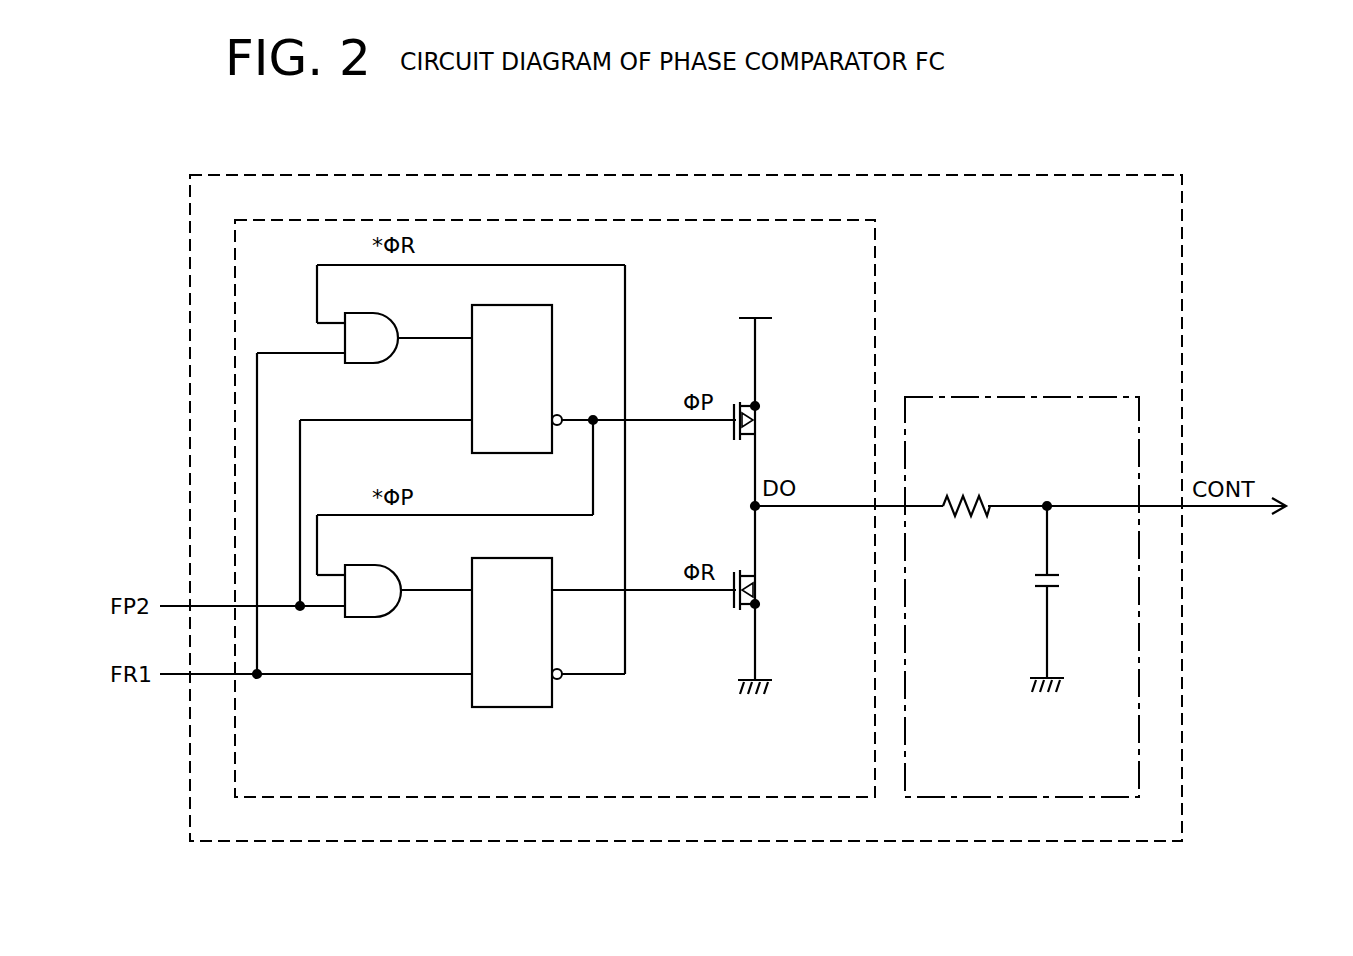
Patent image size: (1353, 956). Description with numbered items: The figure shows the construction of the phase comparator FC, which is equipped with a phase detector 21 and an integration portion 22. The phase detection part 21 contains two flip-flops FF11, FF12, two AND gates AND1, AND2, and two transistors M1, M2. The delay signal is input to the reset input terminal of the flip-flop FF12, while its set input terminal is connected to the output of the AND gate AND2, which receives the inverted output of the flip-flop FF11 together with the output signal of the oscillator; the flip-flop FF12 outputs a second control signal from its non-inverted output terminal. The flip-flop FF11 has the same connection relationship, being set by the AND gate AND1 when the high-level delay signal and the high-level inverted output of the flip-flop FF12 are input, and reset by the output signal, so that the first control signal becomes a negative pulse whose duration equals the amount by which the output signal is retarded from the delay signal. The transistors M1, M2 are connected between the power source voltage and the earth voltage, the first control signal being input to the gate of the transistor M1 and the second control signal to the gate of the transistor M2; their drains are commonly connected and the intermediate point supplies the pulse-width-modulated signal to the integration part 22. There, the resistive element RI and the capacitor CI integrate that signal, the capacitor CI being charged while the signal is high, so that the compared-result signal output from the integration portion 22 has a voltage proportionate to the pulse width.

The phase detector 21 is at (405, 220).
The integration portion 22 is at (1010, 397).
The phase comparator FC is at (615, 175).
The AND gate AND1 is at (390, 313).
The AND gate AND2 is at (392, 566).
The flip-flop FF11 is at (533, 305).
The flip-flop FF12 is at (533, 558).
The transistor M1 is at (765, 398).
The transistor M2 is at (765, 615).
The resistive element RI is at (966, 493).
The capacitor CI is at (1055, 599).